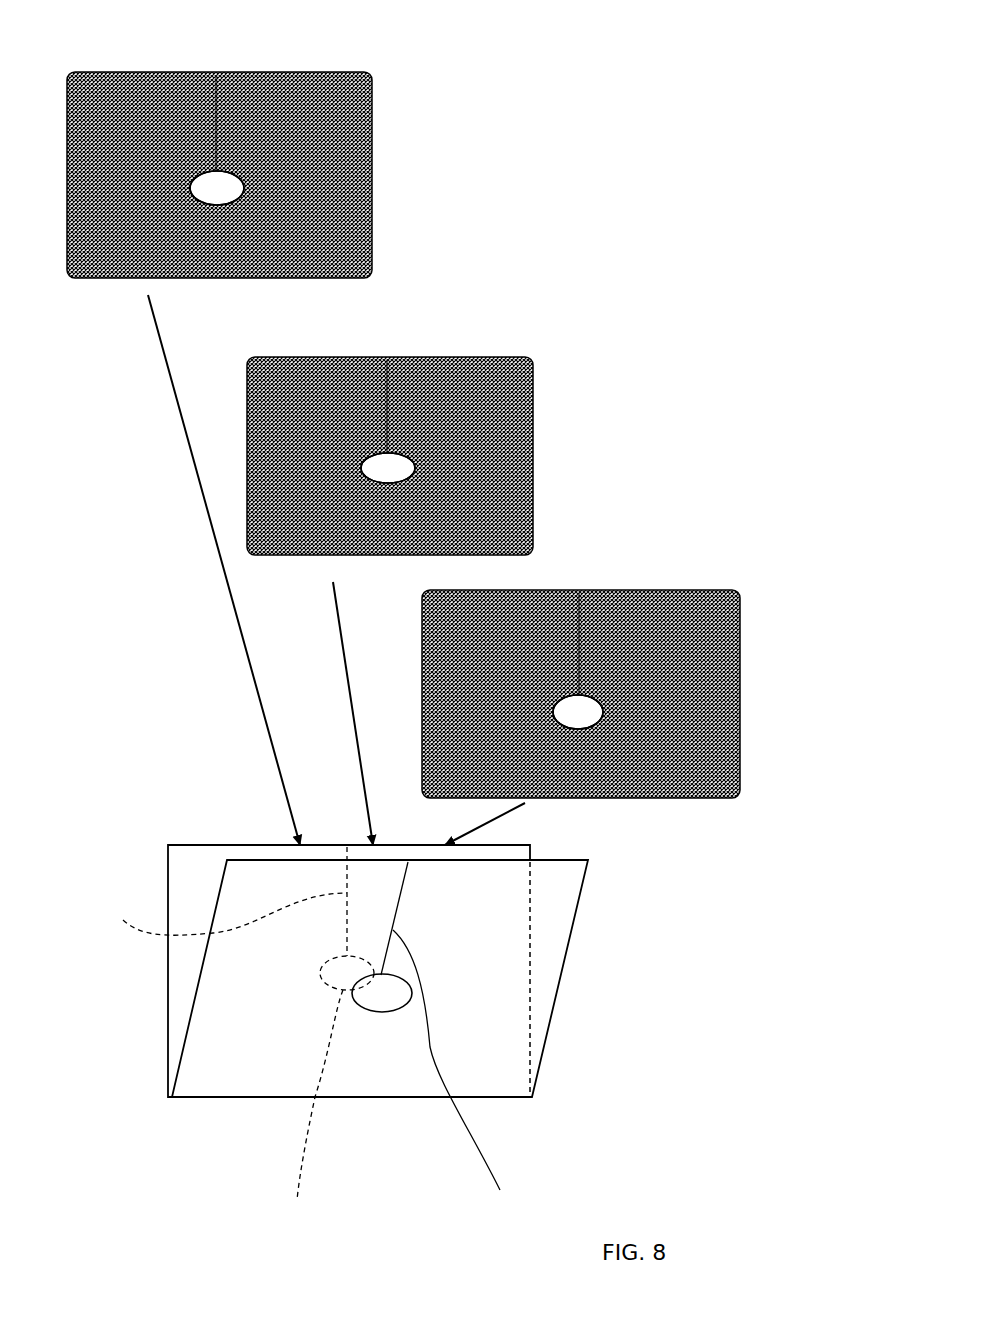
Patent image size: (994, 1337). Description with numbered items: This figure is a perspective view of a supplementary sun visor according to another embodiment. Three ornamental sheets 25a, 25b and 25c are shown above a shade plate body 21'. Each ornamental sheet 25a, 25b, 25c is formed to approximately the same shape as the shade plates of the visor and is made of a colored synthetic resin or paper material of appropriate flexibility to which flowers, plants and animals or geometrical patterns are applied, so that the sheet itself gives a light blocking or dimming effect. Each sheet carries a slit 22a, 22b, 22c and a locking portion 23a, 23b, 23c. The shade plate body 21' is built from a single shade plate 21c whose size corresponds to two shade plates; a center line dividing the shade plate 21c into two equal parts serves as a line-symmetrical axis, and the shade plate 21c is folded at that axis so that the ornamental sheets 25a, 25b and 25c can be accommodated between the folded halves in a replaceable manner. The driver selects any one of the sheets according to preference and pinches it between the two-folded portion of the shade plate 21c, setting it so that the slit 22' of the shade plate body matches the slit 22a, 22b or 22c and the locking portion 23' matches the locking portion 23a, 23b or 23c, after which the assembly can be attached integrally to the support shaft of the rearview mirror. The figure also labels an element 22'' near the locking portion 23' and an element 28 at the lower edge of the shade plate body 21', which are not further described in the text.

The slit 22a is at (215, 107).
The locking portion 23a is at (230, 197).
The ornamental sheet 25a is at (372, 198).
The slit 22b is at (383, 408).
The locking portion 23b is at (390, 480).
The ornamental sheet 25b is at (533, 483).
The slit 22c is at (580, 637).
The locking portion 23c is at (583, 729).
The ornamental sheet 25c is at (637, 605).
The shade plate body 21' is at (312, 971).
The shade plate 21c is at (543, 990).
The slit 22' is at (235, 1023).
The locking portion 23' is at (357, 1037).
The image boundary line 22'' is at (462, 1071).
The base edge of screen 28 is at (265, 1098).